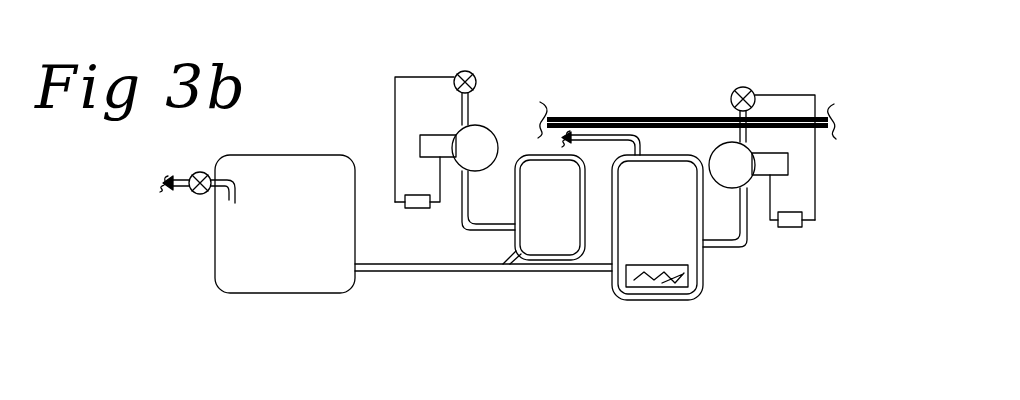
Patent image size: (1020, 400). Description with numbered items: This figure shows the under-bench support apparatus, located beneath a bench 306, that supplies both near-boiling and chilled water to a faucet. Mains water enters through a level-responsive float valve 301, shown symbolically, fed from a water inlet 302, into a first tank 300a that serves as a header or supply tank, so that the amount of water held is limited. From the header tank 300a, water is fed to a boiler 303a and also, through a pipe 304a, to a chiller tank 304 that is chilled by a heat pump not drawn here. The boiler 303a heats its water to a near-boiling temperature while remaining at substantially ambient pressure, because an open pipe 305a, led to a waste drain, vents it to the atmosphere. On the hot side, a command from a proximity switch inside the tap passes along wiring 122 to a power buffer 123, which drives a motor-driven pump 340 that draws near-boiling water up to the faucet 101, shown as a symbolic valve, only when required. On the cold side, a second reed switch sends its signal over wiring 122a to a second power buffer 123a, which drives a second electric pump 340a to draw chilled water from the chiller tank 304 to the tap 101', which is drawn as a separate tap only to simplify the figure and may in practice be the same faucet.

The faucet 101 is at (722, 71).
The tap 101' is at (419, 68).
The wiring 122 is at (813, 97).
The wiring 122a is at (395, 77).
The power buffer 123 is at (780, 228).
The second power buffer 123a is at (420, 209).
The first tank 300a is at (664, 288).
The float valve 301 is at (196, 196).
The fluid inlet 302 is at (165, 190).
The boiler 303a is at (680, 288).
The chiller tank 304 is at (555, 243).
The pipe 304a is at (518, 268).
The open pipe 305a is at (583, 131).
The bench 306 is at (235, 293).
The motor-driven pump 340 is at (745, 167).
The second electric pump 340a is at (468, 150).